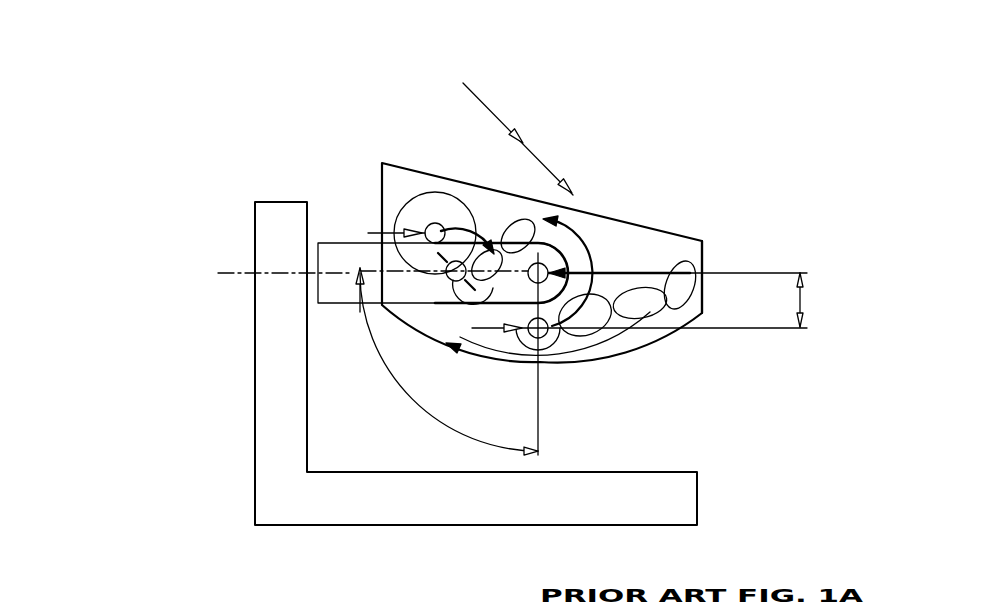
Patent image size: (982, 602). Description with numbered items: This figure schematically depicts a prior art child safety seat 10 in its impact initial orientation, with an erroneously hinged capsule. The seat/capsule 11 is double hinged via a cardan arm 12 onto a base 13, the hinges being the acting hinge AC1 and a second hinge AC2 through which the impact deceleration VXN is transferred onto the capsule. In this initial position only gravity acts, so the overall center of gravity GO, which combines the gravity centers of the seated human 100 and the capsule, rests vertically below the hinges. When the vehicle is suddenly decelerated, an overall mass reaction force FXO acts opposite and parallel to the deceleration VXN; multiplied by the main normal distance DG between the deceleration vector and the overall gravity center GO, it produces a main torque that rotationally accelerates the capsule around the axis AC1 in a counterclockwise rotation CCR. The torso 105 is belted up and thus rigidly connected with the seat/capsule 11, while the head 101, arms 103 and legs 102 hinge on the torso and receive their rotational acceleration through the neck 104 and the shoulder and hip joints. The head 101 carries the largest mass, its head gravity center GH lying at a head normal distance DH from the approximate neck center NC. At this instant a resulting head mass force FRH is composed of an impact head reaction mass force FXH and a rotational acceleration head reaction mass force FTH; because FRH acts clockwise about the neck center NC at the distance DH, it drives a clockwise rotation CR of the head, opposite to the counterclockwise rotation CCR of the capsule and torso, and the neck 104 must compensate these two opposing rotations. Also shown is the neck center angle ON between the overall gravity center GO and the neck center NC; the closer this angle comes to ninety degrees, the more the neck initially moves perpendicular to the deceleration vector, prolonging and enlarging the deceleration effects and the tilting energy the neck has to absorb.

The child safety seat 10 is at (705, 348).
The seat/capsule 11 is at (702, 262).
The cardan arm 12 is at (330, 242).
The base 13 is at (255, 307).
The seated human 100 is at (470, 294).
The head 101 is at (428, 226).
The legs 102 is at (607, 333).
The arms 103 is at (490, 255).
The neck 104 is at (462, 300).
The torso 105 is at (518, 336).
The clockwise rotation CR is at (464, 229).
The counterclockwise rotation CCR is at (592, 236).
The hinge AC1 is at (556, 243).
The second hinge AC2 is at (223, 275).
The head normal distance DH is at (518, 137).
The head gravity center GH is at (400, 212).
The impact head reaction mass force FXH is at (368, 233).
The resulting head mass force FRH is at (358, 312).
The approximate neck center NC is at (452, 274).
The rotational acceleration head reaction mass force FTH is at (470, 289).
The overall mass reaction force FXO is at (490, 328).
The overall center of gravity GO is at (543, 336).
The deceleration VXN is at (652, 268).
The main normal distance DG is at (748, 300).
The neck center angle ON is at (449, 364).